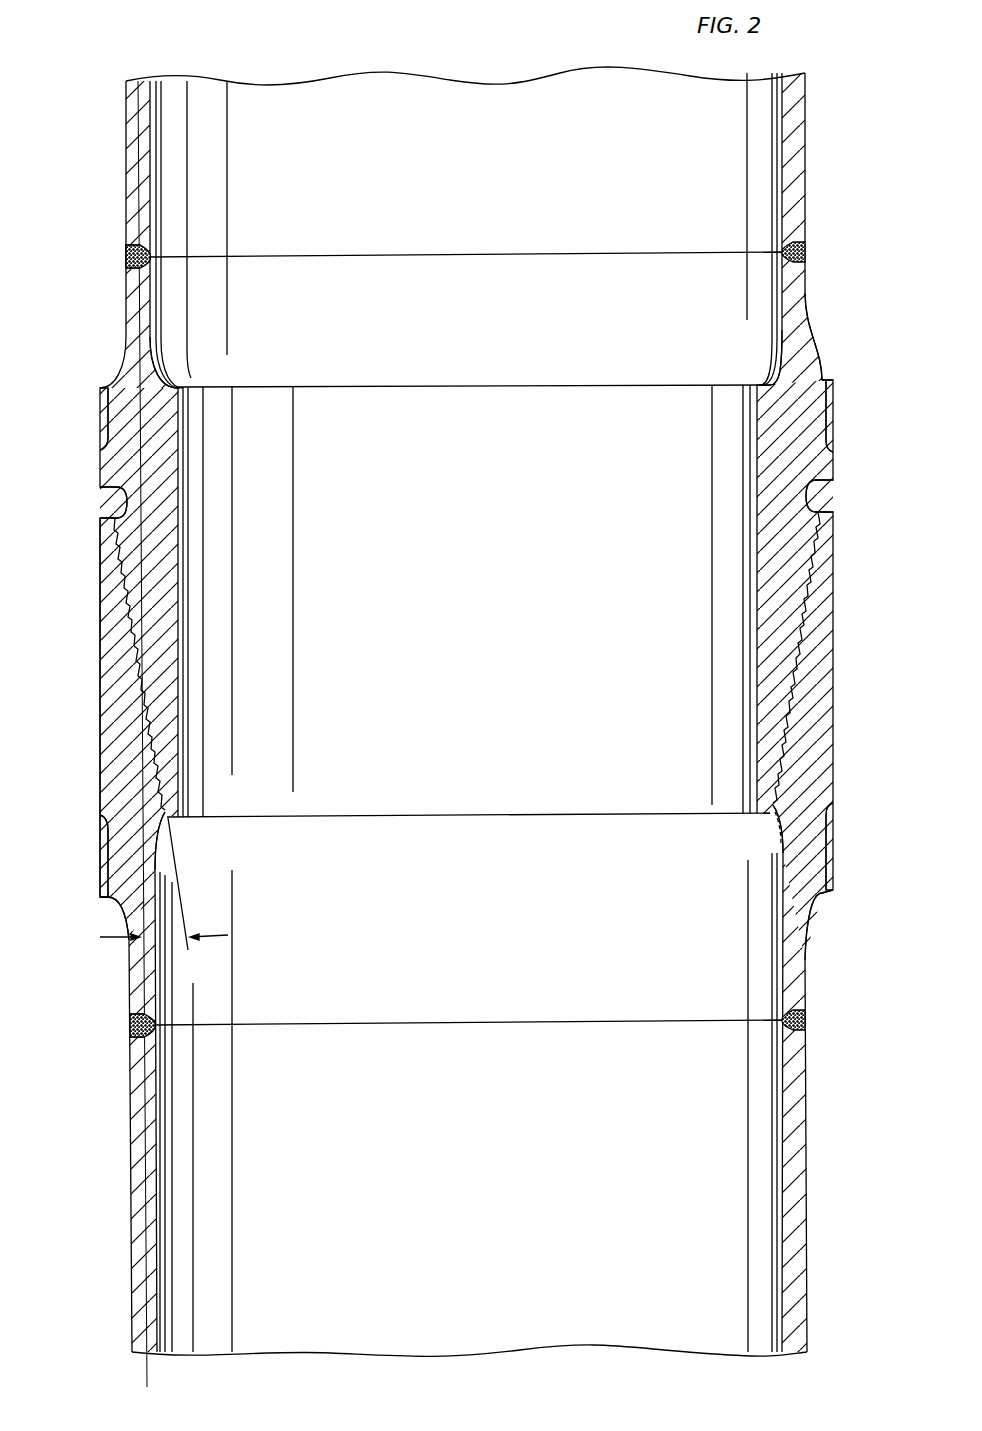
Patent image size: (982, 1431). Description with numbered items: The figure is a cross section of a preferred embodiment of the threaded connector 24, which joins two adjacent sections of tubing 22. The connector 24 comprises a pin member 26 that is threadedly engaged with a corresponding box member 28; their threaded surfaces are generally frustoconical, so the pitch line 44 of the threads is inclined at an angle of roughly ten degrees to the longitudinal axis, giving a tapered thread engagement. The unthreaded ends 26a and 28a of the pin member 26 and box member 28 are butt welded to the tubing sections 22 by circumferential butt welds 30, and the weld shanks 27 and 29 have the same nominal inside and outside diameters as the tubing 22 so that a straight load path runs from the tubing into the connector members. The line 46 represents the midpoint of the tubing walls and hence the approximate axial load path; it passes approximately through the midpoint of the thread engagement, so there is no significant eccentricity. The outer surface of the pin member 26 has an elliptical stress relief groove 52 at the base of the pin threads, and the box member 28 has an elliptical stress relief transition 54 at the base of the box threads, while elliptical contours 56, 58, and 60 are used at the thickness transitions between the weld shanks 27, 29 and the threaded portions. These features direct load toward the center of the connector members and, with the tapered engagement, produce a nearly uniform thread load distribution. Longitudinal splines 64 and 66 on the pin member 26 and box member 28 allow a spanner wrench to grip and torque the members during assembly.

The tubing section 22 is at (126, 150).
The connector 24 is at (70, 635).
The pin member 26 is at (100, 478).
The unthreaded end of pin member 26a is at (280, 257).
The weld shank 27 is at (805, 276).
The box member 28 is at (100, 790).
The unthreaded end of box member 28a is at (288, 1025).
The weld shank 29 is at (807, 990).
The circumferential butt weld 30 is at (126, 257).
The pitch line 44 is at (190, 950).
The line representing midpoint of tubing walls 46 is at (147, 1372).
The elliptical stress relief groove 52 is at (812, 496).
The elliptical stress relief transition 54 is at (770, 822).
The elliptical contour 56 is at (775, 355).
The elliptical contour 58 is at (820, 376).
The elliptical contour 60 is at (815, 908).
The longitudinal spline 64 is at (105, 405).
The longitudinal spline 66 is at (100, 882).